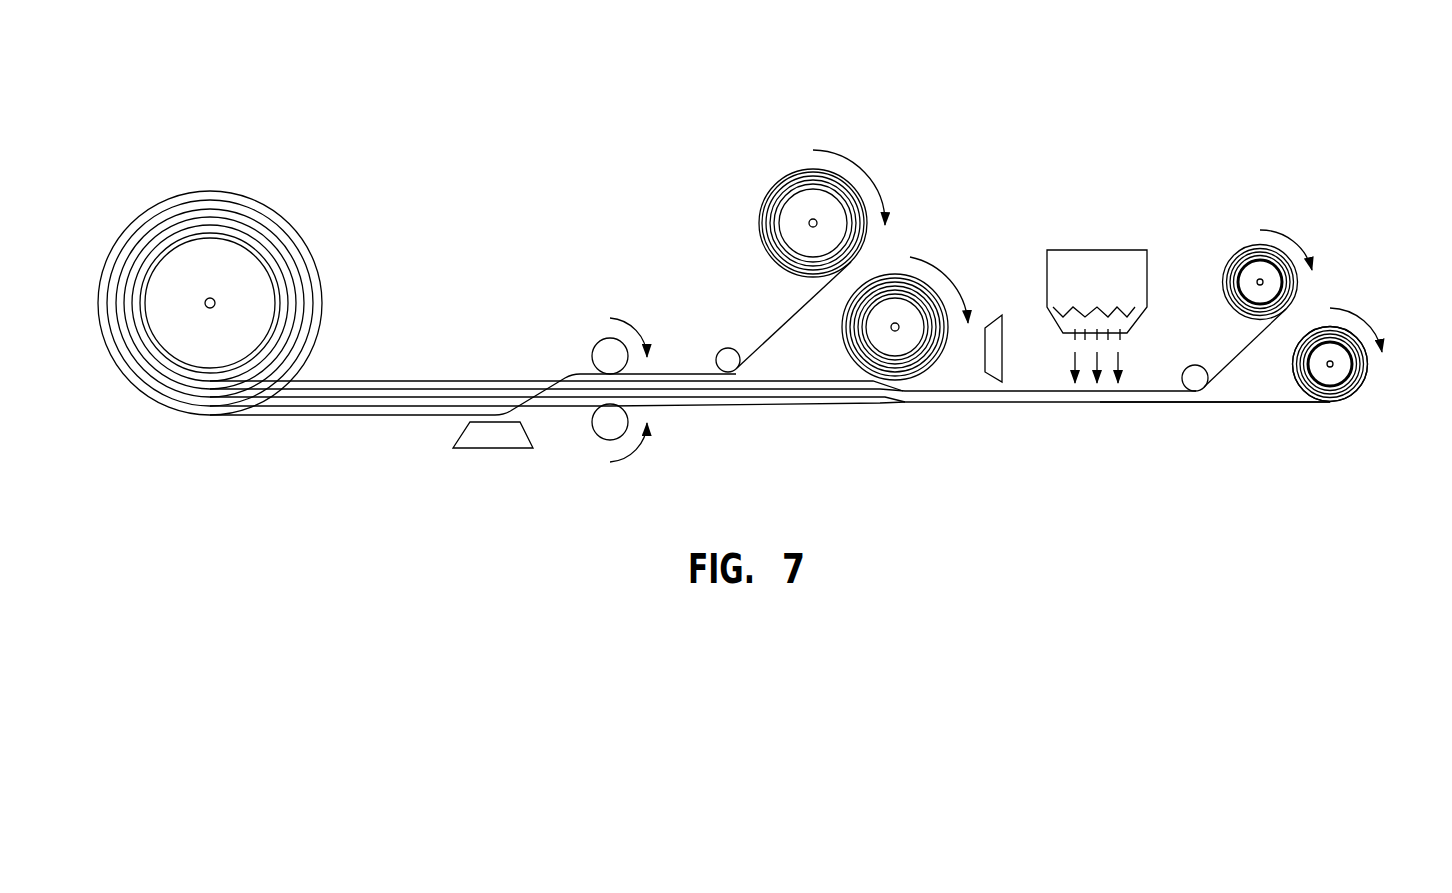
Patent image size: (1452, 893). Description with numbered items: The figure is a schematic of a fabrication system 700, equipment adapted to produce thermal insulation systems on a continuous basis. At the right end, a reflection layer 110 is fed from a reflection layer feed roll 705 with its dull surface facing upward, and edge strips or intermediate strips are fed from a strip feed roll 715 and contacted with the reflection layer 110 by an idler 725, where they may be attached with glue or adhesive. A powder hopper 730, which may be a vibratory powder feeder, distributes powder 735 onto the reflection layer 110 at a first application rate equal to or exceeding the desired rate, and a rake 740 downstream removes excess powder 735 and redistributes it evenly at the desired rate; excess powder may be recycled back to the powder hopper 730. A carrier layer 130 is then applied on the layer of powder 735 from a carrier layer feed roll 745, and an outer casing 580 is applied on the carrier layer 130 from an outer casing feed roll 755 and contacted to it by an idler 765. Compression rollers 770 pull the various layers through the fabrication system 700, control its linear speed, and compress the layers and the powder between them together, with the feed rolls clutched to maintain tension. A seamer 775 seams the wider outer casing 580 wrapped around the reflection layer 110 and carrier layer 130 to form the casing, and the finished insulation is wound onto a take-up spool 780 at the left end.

The fabrication system 700 is at (895, 138).
The reflection layer feed roll 705 is at (1318, 412).
The reflection layer 110 is at (1243, 403).
The strip feed roll 715 is at (1237, 243).
The idler 725 is at (1190, 367).
The powder hopper 730 is at (1093, 248).
The powder 735 is at (1117, 308).
The rake 740 is at (992, 375).
The carrier layer feed roll 745 is at (887, 255).
The outer casing feed roll 755 is at (782, 172).
The outer casing 580 is at (775, 332).
The idler 765 is at (718, 352).
The carrier layer 130 is at (807, 382).
The compression rollers 770 is at (597, 343).
The seamer 775 is at (447, 450).
The take-up spool 780 is at (282, 210).